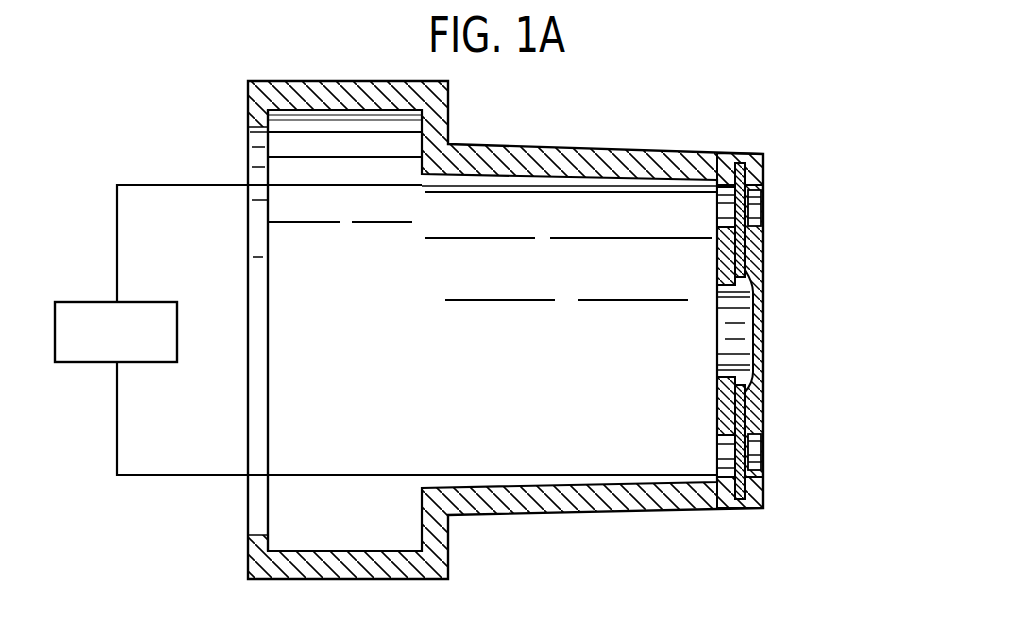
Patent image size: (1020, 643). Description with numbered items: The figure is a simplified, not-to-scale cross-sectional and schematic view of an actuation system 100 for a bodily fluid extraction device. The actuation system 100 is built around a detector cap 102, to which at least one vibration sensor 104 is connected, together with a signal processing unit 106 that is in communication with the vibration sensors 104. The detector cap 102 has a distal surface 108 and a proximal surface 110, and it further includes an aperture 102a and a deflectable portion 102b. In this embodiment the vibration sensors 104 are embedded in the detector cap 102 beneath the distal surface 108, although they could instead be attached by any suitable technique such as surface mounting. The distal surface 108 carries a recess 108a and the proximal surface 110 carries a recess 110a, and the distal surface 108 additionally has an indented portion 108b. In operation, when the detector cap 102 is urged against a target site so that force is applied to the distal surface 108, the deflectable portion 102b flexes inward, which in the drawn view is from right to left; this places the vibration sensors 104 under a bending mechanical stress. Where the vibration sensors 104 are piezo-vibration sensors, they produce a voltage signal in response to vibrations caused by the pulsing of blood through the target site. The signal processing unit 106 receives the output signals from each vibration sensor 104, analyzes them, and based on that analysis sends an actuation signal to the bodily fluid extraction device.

The actuation system 100 is at (731, 117).
The detector cap 102 is at (565, 151).
The aperture 102a is at (750, 335).
The deflectable portion 102b is at (723, 262).
The vibration sensor 104 is at (765, 167).
The signal processing unit 106 is at (139, 345).
The distal surface 108 is at (763, 415).
The recess 108a is at (765, 447).
The indented portion 108b is at (760, 270).
The proximal surface 110 is at (723, 440).
The recess 110a is at (723, 208).